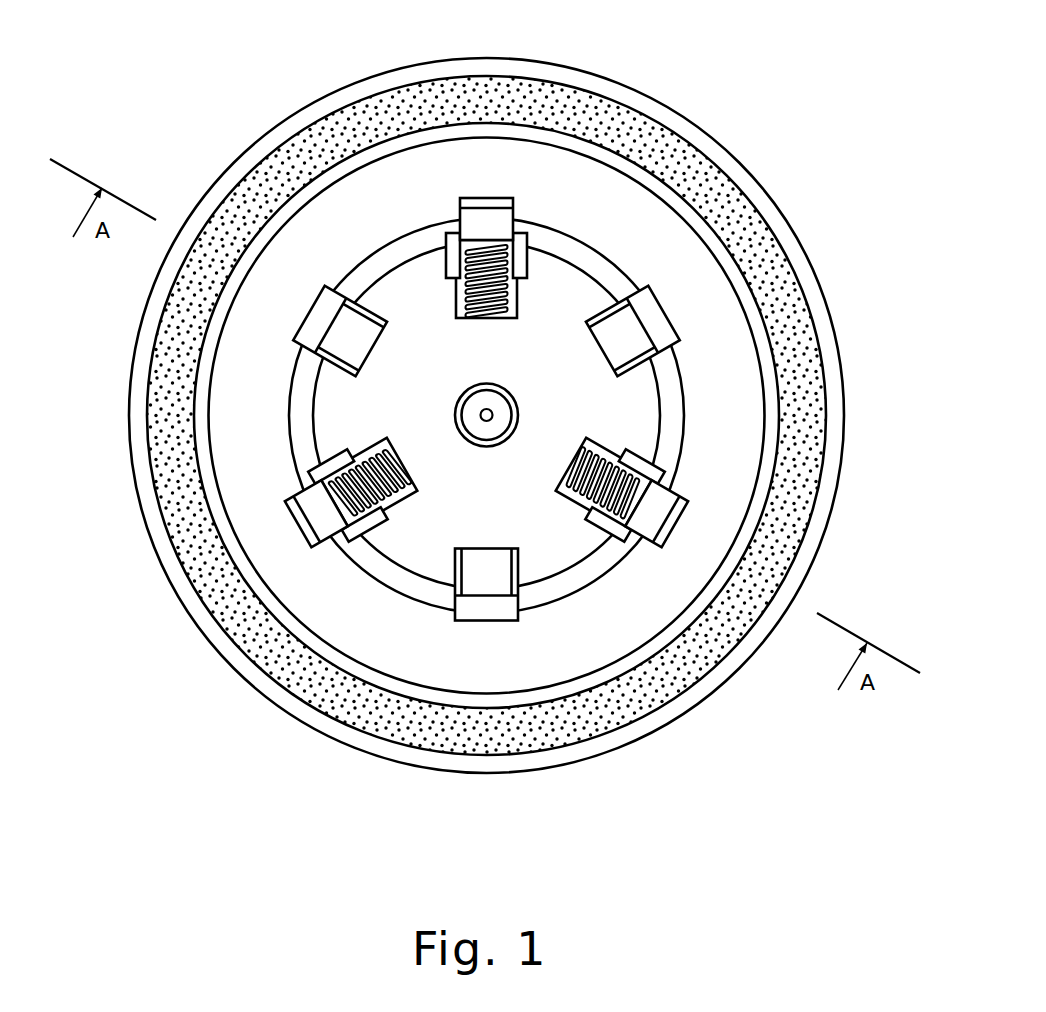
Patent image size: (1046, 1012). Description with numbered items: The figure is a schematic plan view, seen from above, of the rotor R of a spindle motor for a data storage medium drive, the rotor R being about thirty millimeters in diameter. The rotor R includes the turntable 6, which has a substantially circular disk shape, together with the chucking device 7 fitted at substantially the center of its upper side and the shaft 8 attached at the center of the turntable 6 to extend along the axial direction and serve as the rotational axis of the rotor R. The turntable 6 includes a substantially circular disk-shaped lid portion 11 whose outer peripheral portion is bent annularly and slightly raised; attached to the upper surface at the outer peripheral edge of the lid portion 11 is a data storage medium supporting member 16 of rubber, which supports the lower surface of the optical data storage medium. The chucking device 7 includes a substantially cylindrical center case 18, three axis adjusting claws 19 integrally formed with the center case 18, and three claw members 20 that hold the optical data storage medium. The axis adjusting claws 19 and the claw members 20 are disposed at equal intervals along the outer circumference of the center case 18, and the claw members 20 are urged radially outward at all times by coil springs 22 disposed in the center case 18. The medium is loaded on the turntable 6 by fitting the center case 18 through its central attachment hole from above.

The turntable 6 is at (812, 267).
The data storage medium supporting member 16 is at (357, 107).
The lid portion 11 is at (623, 628).
The chucking device 7 is at (559, 236).
The center case 18 is at (667, 392).
The axis adjusting claw 19 is at (317, 317).
The claw member 20 is at (486, 222).
The coil spring 22 is at (470, 297).
The shaft 8 is at (486, 400).
The rotor R is at (727, 85).